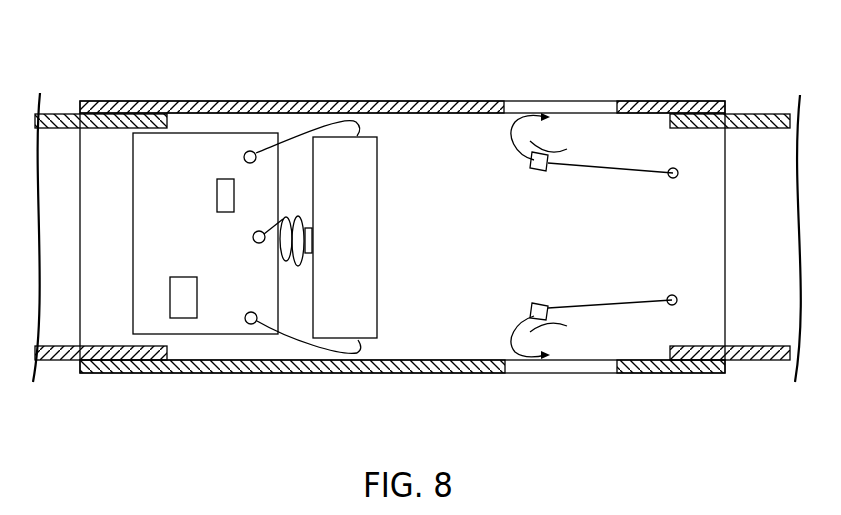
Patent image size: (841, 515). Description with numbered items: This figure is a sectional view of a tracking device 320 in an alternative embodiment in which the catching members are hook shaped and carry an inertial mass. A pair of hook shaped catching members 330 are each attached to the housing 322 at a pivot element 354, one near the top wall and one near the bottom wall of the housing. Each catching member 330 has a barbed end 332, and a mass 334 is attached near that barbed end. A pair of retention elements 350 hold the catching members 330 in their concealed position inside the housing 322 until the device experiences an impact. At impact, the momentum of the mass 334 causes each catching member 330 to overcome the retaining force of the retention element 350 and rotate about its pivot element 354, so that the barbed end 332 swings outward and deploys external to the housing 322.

The tracking device 320 is at (258, 48).
The housing 322 is at (288, 368).
The catching member 330 is at (596, 167).
The barbed end 332 is at (527, 127).
The mass 334 is at (535, 171).
The retention element 350 is at (555, 148).
The pivot element 354 is at (676, 170).